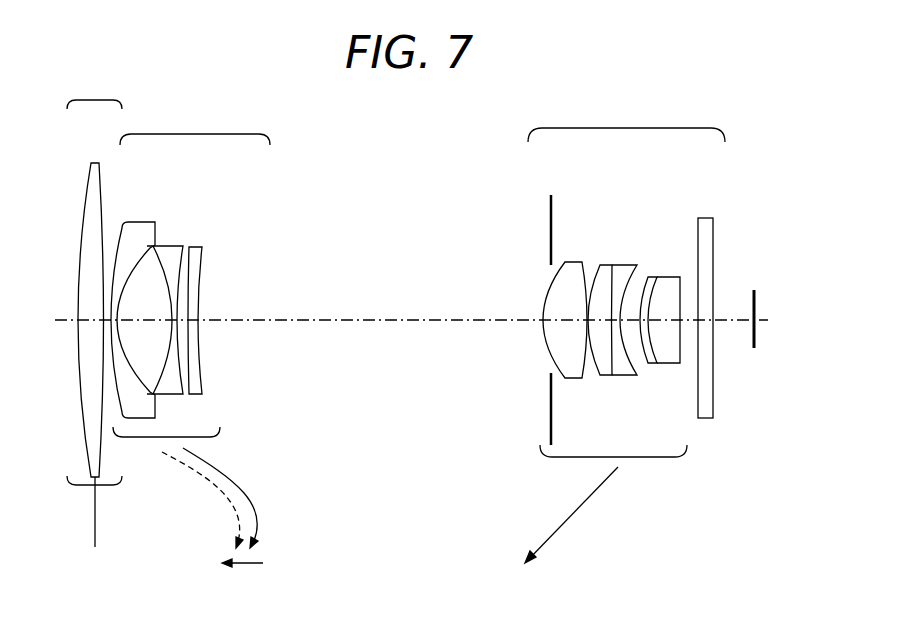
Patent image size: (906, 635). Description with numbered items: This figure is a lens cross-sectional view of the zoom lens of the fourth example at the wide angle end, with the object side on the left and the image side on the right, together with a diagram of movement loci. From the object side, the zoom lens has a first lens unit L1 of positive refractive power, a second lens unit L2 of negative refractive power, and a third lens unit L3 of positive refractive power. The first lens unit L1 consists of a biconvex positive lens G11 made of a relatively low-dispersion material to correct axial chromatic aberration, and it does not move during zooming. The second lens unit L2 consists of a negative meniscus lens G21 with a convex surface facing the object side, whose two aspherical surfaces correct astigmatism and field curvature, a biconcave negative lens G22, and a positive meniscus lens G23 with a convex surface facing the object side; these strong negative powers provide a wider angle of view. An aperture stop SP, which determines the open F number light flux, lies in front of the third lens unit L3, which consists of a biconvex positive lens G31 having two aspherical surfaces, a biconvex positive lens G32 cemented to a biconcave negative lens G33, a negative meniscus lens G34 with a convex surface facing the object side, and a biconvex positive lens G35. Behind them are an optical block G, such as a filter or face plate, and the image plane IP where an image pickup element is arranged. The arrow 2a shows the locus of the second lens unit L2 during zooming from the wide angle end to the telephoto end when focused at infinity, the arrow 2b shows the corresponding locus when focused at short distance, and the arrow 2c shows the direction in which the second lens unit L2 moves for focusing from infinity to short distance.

The first lens unit L1 is at (94, 309).
The biconvex positive lens G11 is at (93, 175).
The second lens unit L2 is at (191, 273).
The negative meniscus lens G21 is at (135, 227).
The biconcave negative lens G22 is at (168, 252).
The positive meniscus lens G23 is at (195, 252).
The third lens unit L3 is at (626, 278).
The biconvex positive lens G31 is at (575, 267).
The biconvex positive lens G32 is at (608, 275).
The biconcave negative lens G33 is at (622, 275).
The negative meniscus lens G34 is at (653, 280).
The biconvex positive lens G35 is at (672, 280).
The aperture stop SP is at (548, 227).
The optical block G is at (707, 223).
The image plane IP is at (757, 300).
The arrow 2a is at (235, 482).
The arrow 2b is at (207, 477).
The arrow 2c is at (250, 572).